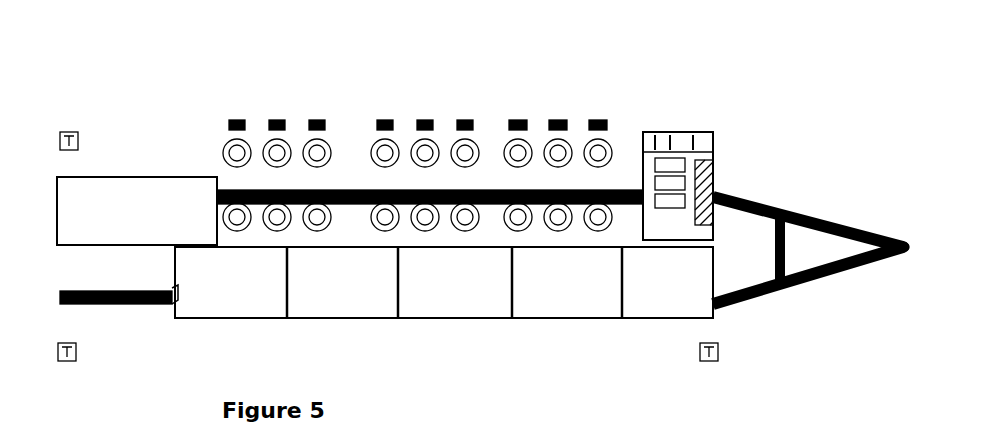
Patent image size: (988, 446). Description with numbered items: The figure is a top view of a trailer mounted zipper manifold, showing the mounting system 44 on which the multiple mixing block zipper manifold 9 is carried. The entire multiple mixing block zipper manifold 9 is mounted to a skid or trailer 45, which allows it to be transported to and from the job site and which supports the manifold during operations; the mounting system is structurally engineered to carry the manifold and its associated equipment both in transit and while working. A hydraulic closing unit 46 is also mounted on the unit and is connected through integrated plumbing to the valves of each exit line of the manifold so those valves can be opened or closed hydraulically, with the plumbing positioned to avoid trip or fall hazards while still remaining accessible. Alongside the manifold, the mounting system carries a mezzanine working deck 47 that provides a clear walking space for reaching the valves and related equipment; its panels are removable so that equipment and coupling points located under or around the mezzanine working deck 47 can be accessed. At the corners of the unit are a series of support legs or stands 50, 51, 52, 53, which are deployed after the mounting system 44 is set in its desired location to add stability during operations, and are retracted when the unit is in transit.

The multiple mixing block zipper manifold 9 is at (371, 101).
The mounting system 44 is at (781, 83).
The skid or trailer 45 is at (808, 290).
The hydraulic closing unit 46 is at (717, 178).
The mezzanine working deck 47 is at (343, 296).
The support leg or stand 50 is at (60, 133).
The support leg or stand 51 is at (708, 133).
The support leg or stand 52 is at (714, 353).
The support leg or stand 53 is at (65, 352).